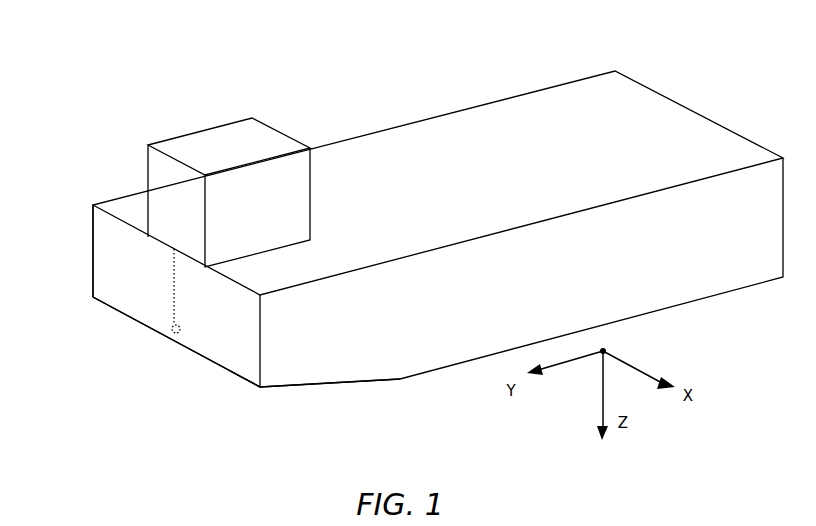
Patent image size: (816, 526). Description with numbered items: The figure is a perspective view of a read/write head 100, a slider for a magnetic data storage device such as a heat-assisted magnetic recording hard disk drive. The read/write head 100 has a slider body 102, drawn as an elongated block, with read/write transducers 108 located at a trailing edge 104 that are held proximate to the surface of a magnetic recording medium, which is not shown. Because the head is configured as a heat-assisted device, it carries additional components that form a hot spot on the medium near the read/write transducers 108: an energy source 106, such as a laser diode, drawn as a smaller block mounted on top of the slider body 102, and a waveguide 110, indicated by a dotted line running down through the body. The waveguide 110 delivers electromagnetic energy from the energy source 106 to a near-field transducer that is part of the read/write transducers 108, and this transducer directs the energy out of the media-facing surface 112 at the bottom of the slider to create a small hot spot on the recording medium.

The read/write head 100 is at (318, 70).
The slider body 102 is at (388, 138).
The trailing edge 104 is at (93, 273).
The energy source 106 is at (232, 137).
The read/write transducers 108 is at (170, 365).
The waveguide 110 is at (175, 290).
The media-facing surface 112 is at (249, 382).